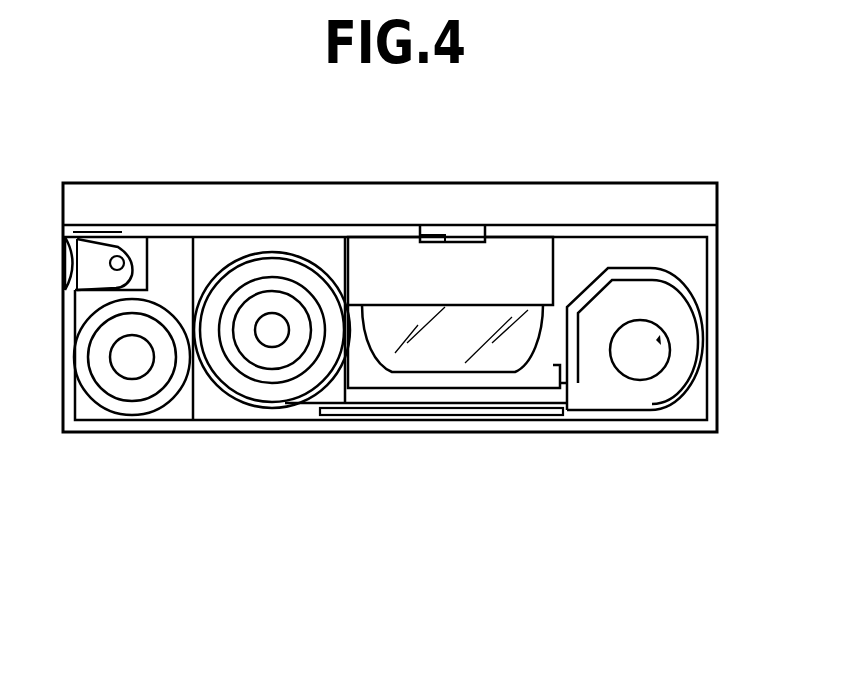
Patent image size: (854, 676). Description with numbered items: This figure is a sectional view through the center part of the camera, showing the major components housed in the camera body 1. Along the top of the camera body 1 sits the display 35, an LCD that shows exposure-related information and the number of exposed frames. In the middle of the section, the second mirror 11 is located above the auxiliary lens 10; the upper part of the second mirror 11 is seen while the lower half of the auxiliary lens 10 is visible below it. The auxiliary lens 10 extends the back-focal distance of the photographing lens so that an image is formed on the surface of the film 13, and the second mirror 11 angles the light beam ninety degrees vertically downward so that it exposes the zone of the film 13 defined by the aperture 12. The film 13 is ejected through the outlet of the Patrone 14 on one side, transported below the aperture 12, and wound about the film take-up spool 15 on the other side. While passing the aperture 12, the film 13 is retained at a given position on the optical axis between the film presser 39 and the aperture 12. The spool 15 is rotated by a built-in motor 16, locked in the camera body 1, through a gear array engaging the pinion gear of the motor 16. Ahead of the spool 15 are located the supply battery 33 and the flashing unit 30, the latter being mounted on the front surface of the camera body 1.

The camera body 1 is at (672, 200).
The auxiliary lens 10 is at (415, 360).
The second mirror 11 is at (509, 255).
The aperture 12 is at (567, 395).
The film 13 is at (262, 390).
The Patrone 14 is at (655, 395).
The film take-up spool 15 is at (265, 282).
The motor 16 is at (291, 303).
The flashing unit 30 is at (93, 257).
The supply battery 33 is at (128, 400).
The display 35 is at (437, 240).
The film presser 39 is at (345, 410).